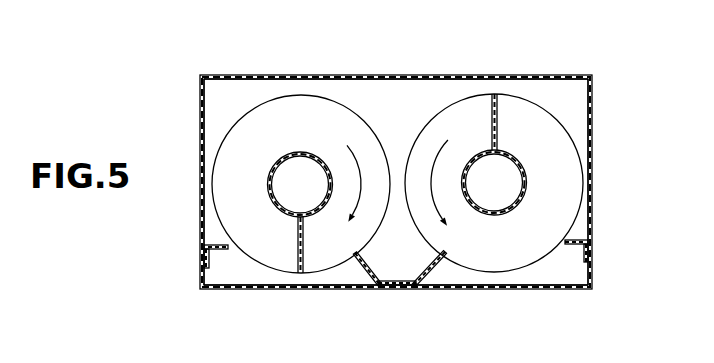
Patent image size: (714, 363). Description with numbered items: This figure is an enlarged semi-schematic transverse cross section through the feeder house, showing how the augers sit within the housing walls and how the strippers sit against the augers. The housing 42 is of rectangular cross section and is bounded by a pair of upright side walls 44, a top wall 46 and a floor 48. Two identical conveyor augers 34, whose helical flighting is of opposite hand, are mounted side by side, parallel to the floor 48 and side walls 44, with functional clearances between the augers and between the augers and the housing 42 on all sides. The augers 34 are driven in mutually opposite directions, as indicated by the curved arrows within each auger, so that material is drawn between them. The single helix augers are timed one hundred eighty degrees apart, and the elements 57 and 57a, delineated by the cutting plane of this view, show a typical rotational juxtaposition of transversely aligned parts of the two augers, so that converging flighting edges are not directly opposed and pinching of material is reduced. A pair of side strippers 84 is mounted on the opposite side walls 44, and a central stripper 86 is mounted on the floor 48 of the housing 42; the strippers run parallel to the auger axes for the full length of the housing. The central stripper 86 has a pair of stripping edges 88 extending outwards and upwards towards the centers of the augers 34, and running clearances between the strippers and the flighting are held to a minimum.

The housing 42 is at (357, 66).
The top wall 46 is at (440, 77).
The side walls 44 is at (200, 136).
The floor 48 is at (510, 289).
The conveyor auger 34 is at (276, 90).
The transversely aligned auger element 57 is at (298, 252).
The transversely aligned auger element 57a is at (497, 115).
The side strippers 84 is at (223, 246).
The stripping edges 88 is at (356, 256).
The central stripper 86 is at (392, 290).